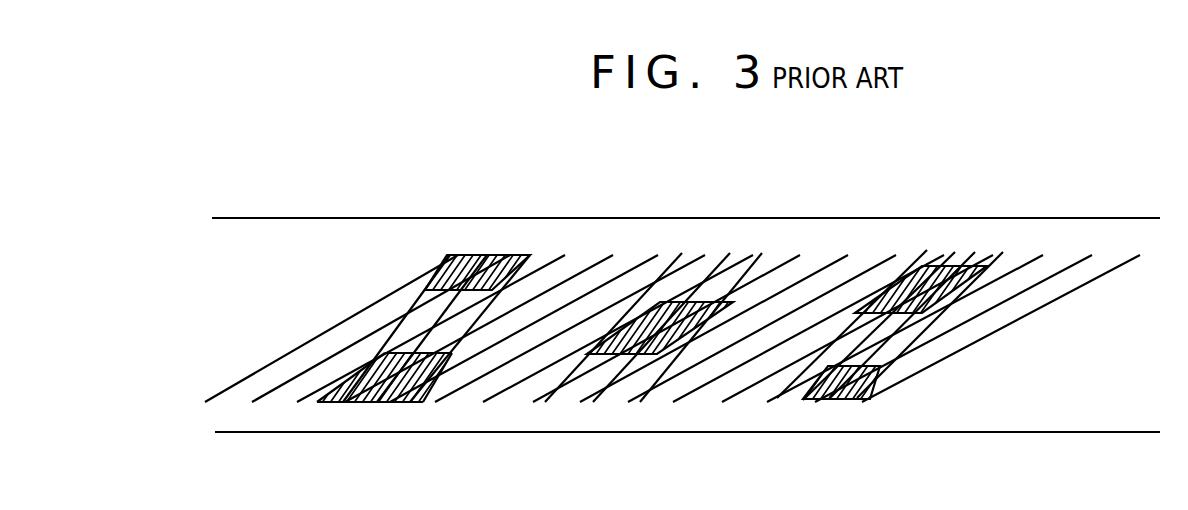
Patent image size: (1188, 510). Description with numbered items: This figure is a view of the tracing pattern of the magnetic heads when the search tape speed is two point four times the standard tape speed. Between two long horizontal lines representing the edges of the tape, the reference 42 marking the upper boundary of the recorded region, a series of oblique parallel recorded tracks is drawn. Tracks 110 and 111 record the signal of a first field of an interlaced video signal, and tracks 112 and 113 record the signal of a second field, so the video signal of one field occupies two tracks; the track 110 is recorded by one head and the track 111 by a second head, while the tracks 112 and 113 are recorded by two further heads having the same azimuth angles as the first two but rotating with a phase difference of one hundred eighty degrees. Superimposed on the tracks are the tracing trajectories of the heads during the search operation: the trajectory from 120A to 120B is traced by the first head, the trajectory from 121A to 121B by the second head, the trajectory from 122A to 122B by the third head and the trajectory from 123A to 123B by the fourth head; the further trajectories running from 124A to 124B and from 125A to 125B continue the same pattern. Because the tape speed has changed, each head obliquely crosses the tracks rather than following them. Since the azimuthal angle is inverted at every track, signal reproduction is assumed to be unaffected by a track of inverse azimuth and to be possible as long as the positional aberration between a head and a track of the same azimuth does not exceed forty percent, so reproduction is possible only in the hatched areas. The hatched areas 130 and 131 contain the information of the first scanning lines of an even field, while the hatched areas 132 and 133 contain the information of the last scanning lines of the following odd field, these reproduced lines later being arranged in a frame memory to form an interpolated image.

The substrate surface line 42 is at (222, 226).
The track 110 is at (225, 403).
The track 111 is at (272, 403).
The track 112 is at (585, 250).
The track 113 is at (630, 250).
The tracing trajectory 120A is at (485, 250).
The tracing trajectory 120B is at (338, 403).
The tracing trajectory 121A is at (535, 250).
The tracing trajectory 121B is at (400, 405).
The tracing trajectory 122A is at (717, 250).
The tracing trajectory 122B is at (558, 402).
The tracing trajectory 123A is at (768, 255).
The tracing trajectory 123B is at (623, 402).
The upper electrode segment 124A is at (923, 255).
The lower electrode segment 124B is at (800, 402).
The upper electrode segment 125A is at (967, 255).
The lower electrode segment 125B is at (847, 402).
The hatched area 130 is at (440, 270).
The hatched area 131 is at (462, 256).
The hatched area 132 is at (360, 372).
The hatched area 133 is at (413, 355).